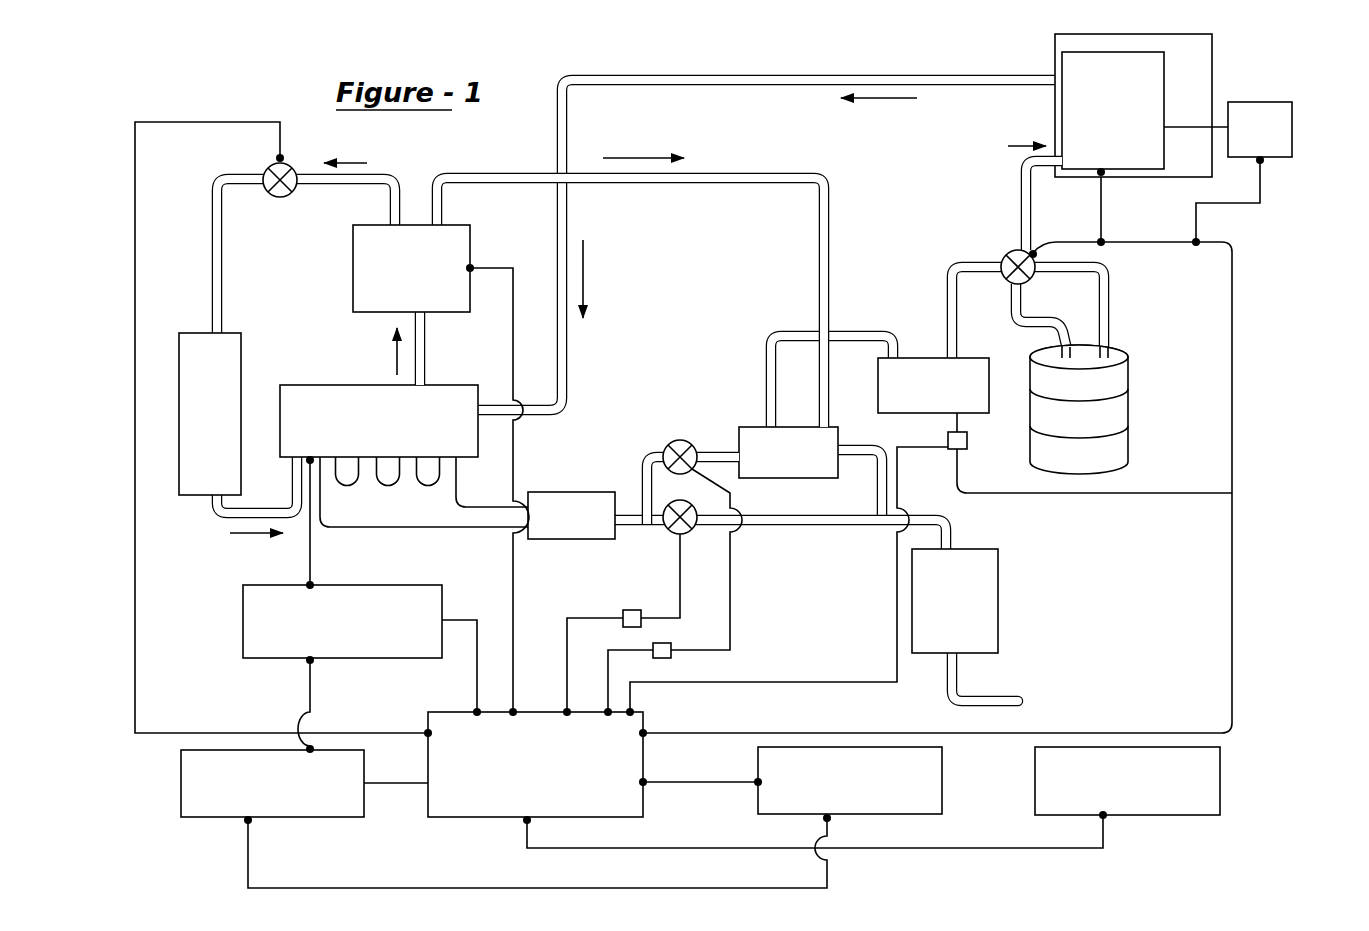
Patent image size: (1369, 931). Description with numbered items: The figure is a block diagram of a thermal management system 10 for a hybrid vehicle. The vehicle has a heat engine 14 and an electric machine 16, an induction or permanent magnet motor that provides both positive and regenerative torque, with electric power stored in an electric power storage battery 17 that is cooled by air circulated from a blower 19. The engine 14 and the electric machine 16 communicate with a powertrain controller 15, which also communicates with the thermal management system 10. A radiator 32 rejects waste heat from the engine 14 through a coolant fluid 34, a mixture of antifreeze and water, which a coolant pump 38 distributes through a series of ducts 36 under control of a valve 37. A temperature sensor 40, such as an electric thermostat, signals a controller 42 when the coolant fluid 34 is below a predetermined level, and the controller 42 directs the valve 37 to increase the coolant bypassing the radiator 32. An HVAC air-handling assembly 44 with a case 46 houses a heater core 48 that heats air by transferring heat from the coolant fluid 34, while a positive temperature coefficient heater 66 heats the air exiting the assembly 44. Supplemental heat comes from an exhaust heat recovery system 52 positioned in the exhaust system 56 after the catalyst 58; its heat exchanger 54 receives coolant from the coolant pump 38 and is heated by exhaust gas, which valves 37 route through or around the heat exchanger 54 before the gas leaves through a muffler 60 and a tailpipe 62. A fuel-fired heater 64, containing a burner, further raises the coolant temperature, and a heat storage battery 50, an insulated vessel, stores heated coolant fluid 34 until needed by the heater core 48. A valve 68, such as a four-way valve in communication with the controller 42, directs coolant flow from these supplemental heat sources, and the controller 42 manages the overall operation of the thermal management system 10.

The thermal management system 10 is at (818, 53).
The heat engine 14 is at (310, 385).
The powertrain controller 15 is at (443, 601).
The electric machine 16 is at (331, 818).
The electric power storage battery 17 is at (942, 789).
The blower 19 is at (1180, 817).
The radiator 32 is at (179, 466).
The coolant fluid 34 is at (398, 206).
The ducts 36 is at (485, 173).
The valve 37 is at (680, 440).
The coolant pump 38 is at (354, 262).
The temperature sensor 40 is at (283, 160).
The controller 42 is at (643, 800).
The HVAC air-handling assembly 44 is at (900, 222).
The case 46 is at (1212, 66).
The heater core 48 is at (1137, 144).
The heat storage battery 50 is at (1128, 410).
The exhaust heat recovery system 52 is at (792, 425).
The heat exchanger 54 is at (810, 479).
The exhaust system 56 is at (624, 469).
The catalyst 58 is at (559, 492).
The muffler 60 is at (998, 571).
The tailpipe 62 is at (1011, 663).
The fuel-fired heater 64 is at (933, 357).
The positive temperature coefficient heater 66 is at (1292, 129).
The valve 68 is at (1008, 253).